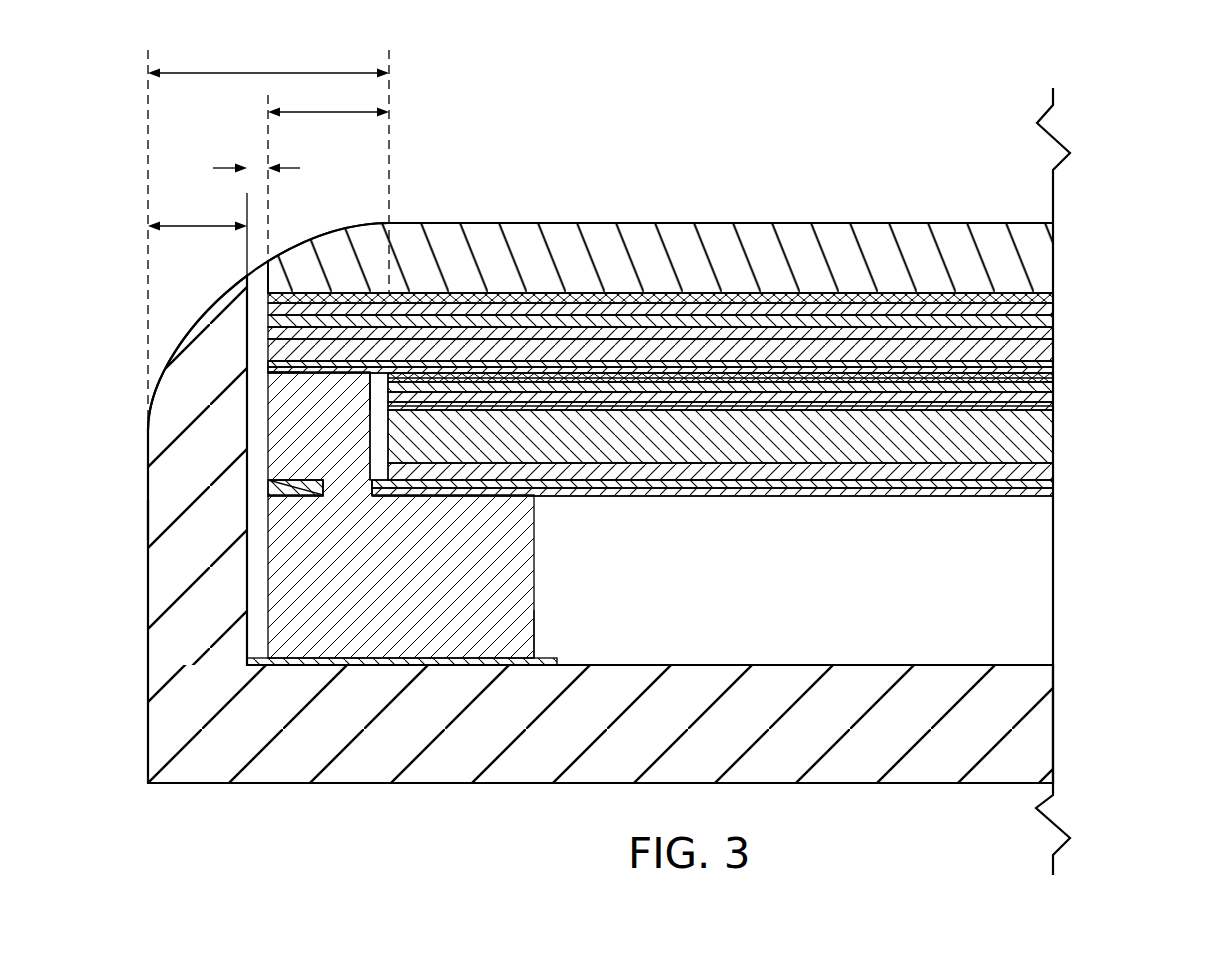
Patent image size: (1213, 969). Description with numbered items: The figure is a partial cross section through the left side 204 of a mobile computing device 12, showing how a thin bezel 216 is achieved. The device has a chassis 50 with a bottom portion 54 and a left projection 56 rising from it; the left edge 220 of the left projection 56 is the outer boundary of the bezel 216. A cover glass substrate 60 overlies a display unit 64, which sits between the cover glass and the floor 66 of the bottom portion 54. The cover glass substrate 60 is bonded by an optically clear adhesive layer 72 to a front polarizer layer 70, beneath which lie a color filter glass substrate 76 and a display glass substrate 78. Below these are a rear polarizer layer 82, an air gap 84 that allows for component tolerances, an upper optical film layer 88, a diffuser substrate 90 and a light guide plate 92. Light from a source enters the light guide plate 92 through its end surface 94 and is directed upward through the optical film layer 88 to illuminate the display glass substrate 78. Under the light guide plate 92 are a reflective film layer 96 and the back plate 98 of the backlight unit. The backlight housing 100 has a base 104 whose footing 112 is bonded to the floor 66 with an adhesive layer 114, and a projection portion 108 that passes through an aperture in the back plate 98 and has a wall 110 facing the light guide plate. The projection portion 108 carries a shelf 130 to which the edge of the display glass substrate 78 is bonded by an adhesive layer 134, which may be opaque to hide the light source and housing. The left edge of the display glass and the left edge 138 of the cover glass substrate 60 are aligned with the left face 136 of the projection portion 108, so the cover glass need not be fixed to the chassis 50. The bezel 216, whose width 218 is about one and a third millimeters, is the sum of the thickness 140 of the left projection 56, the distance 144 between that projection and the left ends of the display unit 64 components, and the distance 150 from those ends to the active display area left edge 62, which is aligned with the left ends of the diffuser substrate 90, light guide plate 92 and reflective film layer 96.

The mobile computing device 12 is at (680, 165).
The chassis 50 is at (444, 820).
The bottom portion 54 is at (284, 783).
The left projection 56 is at (197, 318).
The cover glass substrate 60 is at (470, 223).
The active display area left edge 62 is at (391, 176).
The display unit 64 is at (688, 382).
The floor 66 is at (708, 665).
The front polarizer layer 70 is at (1053, 308).
The optically clear adhesive layer 72 is at (1053, 285).
The color filter glass substrate 76 is at (1053, 330).
The display glass substrate 78 is at (1053, 350).
The rear polarizer layer 82 is at (1053, 368).
The air gap 84 is at (1053, 378).
The upper optical film layer 88 is at (1053, 392).
The diffuser substrate 90 is at (1053, 406).
The light guide plate 92 is at (1053, 436).
The end surface 94 is at (378, 438).
The reflective film layer 96 is at (1053, 470).
The back plate 98 is at (691, 498).
The backlight housing 100 is at (582, 549).
The base 104 is at (397, 570).
The projection portion 108 is at (311, 425).
The wall 110 is at (374, 408).
The footing 112 is at (505, 657).
The adhesive layer 114 is at (558, 662).
The shelf 130 is at (278, 378).
The adhesive layer 134 is at (268, 362).
The left face 136 is at (268, 448).
The left edge 138 is at (268, 285).
The thickness 140 is at (193, 224).
The distance 144 is at (236, 166).
The distance 150 is at (291, 112).
The left side 204 is at (116, 610).
The bezel 216 is at (278, 212).
The width 218 is at (230, 74).
The left edge 220 is at (148, 518).